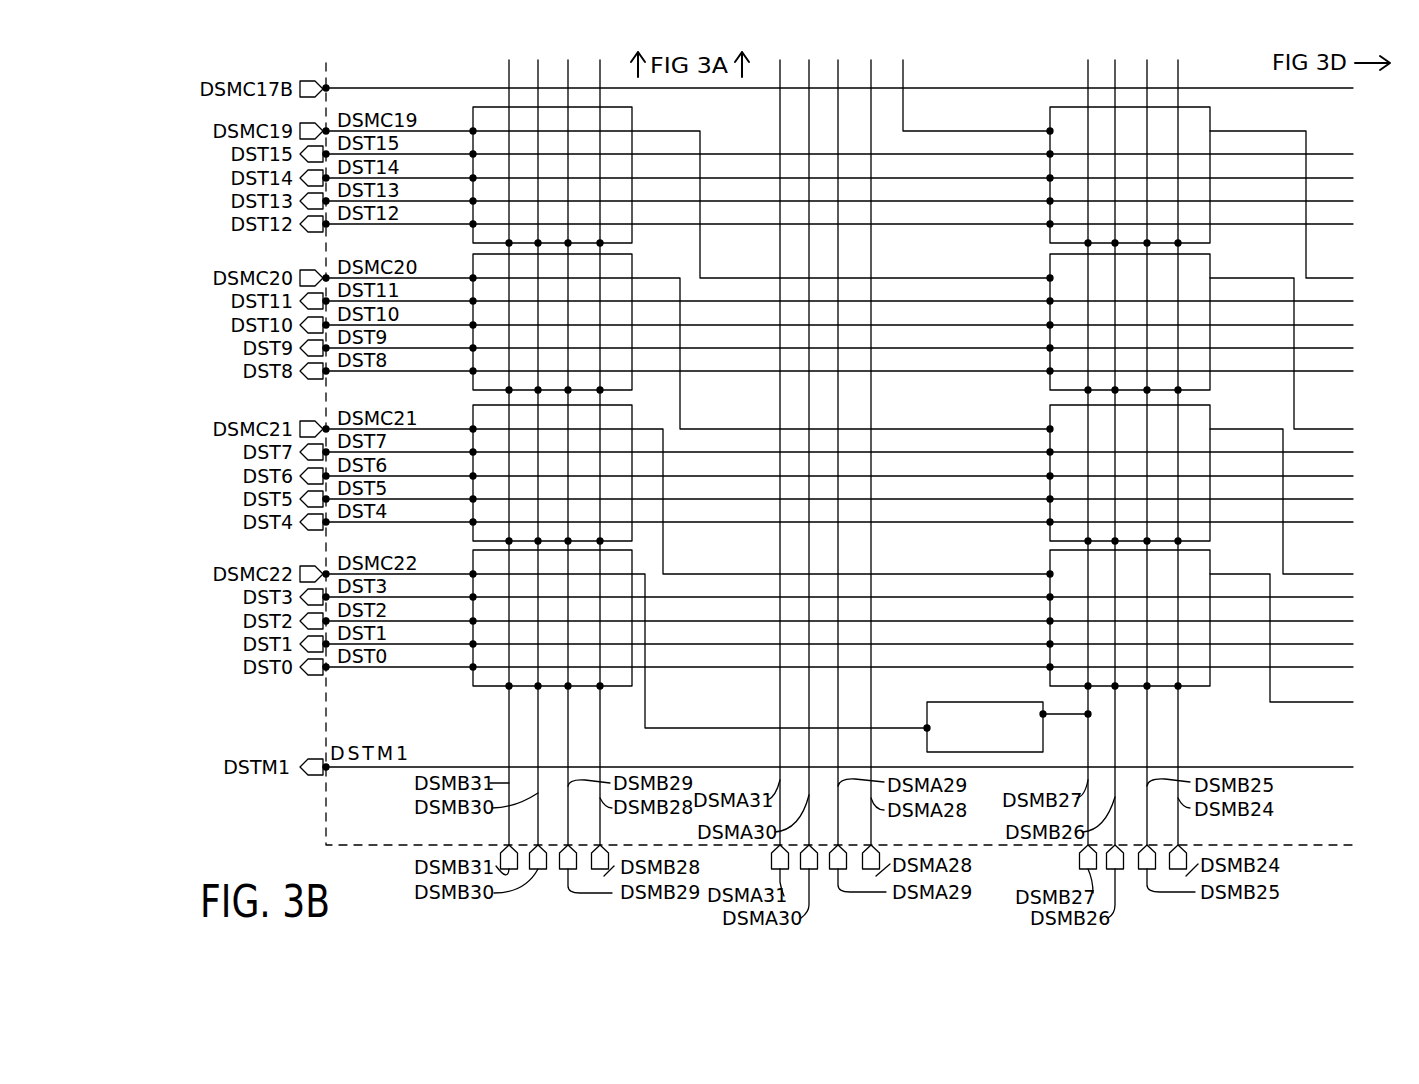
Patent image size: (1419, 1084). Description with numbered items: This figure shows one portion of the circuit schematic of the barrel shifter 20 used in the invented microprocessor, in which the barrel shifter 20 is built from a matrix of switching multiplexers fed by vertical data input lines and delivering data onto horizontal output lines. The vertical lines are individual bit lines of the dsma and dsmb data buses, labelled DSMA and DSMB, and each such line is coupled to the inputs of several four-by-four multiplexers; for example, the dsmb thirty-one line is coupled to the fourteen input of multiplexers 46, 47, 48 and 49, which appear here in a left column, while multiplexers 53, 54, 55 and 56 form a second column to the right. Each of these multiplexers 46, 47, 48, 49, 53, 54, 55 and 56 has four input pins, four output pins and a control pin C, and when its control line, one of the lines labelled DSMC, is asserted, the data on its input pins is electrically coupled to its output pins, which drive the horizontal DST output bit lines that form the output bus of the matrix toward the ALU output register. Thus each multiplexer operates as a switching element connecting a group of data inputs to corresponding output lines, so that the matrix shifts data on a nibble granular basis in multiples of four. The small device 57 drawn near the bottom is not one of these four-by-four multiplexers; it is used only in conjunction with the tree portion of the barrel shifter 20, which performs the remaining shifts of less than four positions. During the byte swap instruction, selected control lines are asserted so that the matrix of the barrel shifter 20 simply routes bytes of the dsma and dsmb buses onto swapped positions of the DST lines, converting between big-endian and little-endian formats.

The barrel shifter 20 is at (326, 722).
The multiplexer 46 is at (632, 116).
The multiplexer 47 is at (632, 263).
The multiplexer 48 is at (632, 414).
The multiplexer 49 is at (632, 559).
The multiplexer 53 is at (1210, 116).
The multiplexer 54 is at (1210, 263).
The multiplexer 55 is at (1210, 414).
The multiplexer 56 is at (1210, 559).
The device used with tree 57 is at (928, 702).